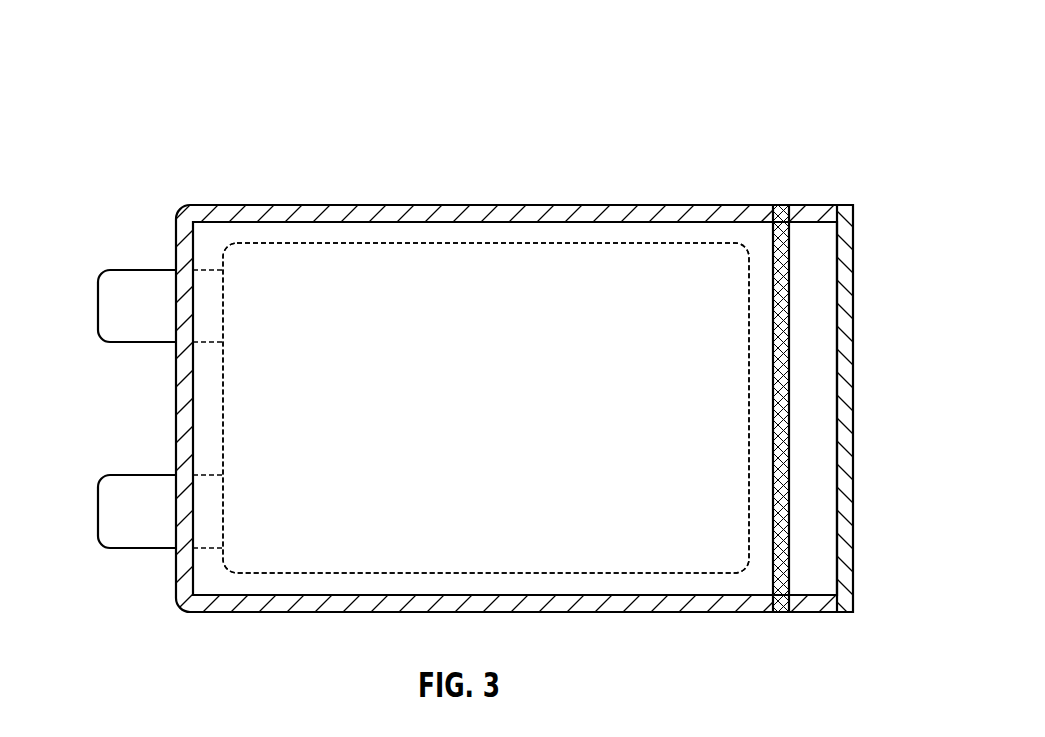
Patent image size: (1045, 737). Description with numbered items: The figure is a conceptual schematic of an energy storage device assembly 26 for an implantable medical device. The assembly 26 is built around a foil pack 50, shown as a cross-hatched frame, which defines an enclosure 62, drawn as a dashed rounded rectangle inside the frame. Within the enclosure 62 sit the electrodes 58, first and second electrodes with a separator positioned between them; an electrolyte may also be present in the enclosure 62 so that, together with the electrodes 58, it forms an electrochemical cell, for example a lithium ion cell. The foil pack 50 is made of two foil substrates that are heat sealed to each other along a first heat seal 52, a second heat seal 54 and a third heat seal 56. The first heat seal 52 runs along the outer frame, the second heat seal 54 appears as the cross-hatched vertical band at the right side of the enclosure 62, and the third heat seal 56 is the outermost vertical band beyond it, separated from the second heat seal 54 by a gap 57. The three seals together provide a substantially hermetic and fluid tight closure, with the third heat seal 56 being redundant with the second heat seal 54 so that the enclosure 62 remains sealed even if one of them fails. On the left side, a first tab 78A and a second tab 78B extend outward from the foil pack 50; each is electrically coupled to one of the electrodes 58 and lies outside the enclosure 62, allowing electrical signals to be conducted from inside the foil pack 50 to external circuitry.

The assembly 26 is at (843, 65).
The foil pack 50 is at (212, 198).
The first heat seal 52 is at (328, 215).
The second heat seal 54 is at (783, 207).
The third heat seal 56 is at (848, 295).
The gap between layer and end wall 57 is at (815, 495).
The electrodes 58 is at (468, 300).
The enclosure 62 is at (645, 235).
The first tab 78A is at (115, 300).
The second tab 78B is at (108, 505).